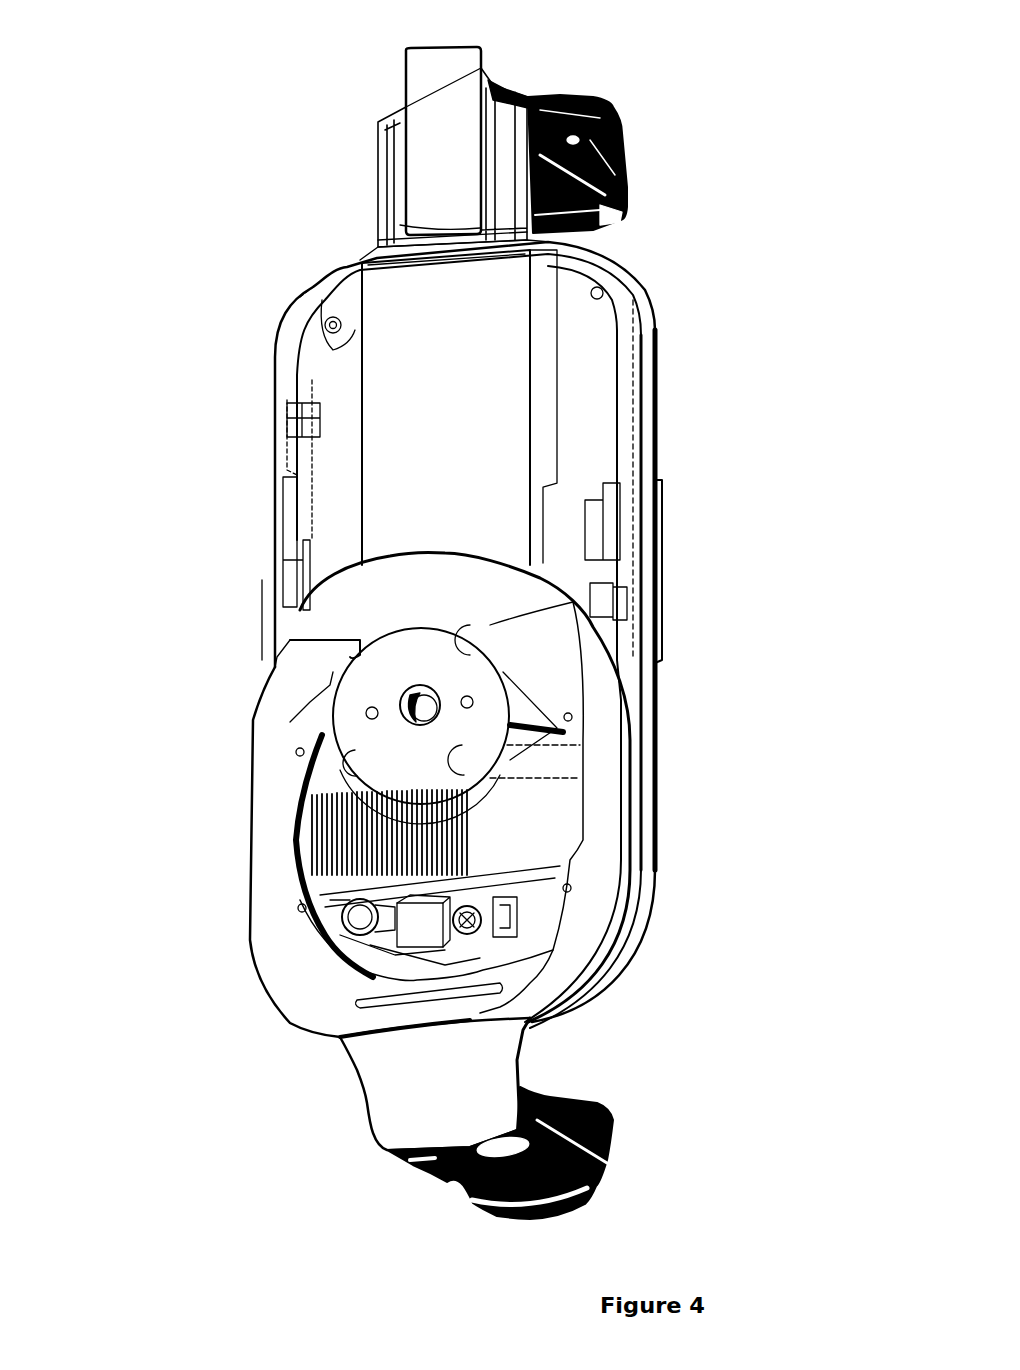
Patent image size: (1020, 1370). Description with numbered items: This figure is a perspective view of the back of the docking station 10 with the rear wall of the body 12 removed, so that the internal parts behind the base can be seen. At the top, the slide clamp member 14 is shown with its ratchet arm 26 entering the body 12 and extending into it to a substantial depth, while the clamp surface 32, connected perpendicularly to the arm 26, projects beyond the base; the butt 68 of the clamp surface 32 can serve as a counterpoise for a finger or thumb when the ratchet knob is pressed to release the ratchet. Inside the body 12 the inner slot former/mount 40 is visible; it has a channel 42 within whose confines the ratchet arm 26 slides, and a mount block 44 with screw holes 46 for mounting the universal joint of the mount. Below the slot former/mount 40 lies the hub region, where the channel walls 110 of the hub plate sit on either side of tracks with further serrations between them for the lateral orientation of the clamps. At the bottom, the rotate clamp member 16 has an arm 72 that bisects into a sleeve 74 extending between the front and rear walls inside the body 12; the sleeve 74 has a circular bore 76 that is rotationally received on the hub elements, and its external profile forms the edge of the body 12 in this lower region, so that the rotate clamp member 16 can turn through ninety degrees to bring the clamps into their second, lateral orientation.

The docking station 10 is at (158, 340).
The body 12 is at (667, 561).
The slide clamp member 14 is at (533, 83).
The rotate clamp member 16 is at (618, 1120).
The ratchet arm 26 is at (370, 192).
The clamp surface 32 is at (607, 230).
The inner slot former/mount 40 is at (475, 360).
The channel 42 is at (525, 452).
The mount block 44 is at (447, 751).
The screw holes 46 is at (365, 712).
The butt 68 is at (617, 127).
The arm 72 is at (360, 1085).
The sleeve 74 is at (623, 838).
The circular bore 76 is at (570, 835).
The channel walls 110 is at (503, 900).